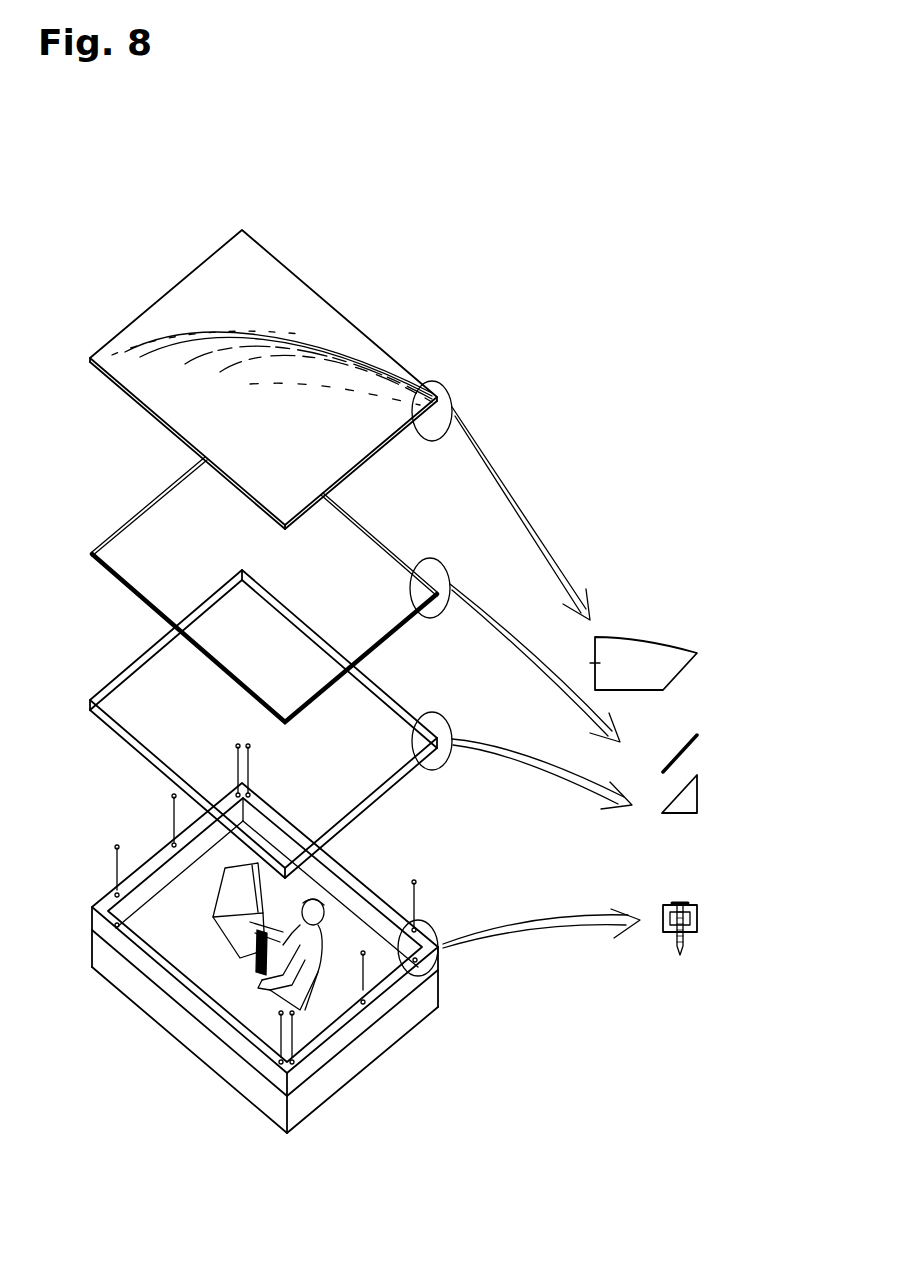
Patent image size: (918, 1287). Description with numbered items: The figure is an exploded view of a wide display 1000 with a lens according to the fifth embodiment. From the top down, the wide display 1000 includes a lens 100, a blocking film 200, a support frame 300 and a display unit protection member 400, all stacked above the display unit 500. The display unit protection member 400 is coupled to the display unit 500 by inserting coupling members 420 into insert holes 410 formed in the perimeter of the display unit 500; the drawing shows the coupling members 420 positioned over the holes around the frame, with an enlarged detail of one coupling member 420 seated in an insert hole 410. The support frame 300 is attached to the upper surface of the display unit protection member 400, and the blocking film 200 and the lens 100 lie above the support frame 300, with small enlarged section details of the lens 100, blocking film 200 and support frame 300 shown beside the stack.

The wide display 1000 is at (125, 182).
The lens 100 is at (343, 333).
The blocking film 200 is at (103, 549).
The support frame 300 is at (103, 698).
The display unit protection member 400 is at (373, 895).
The insert hole 410 is at (700, 920).
The coupling member 420 is at (420, 898).
The display unit 500 is at (441, 987).